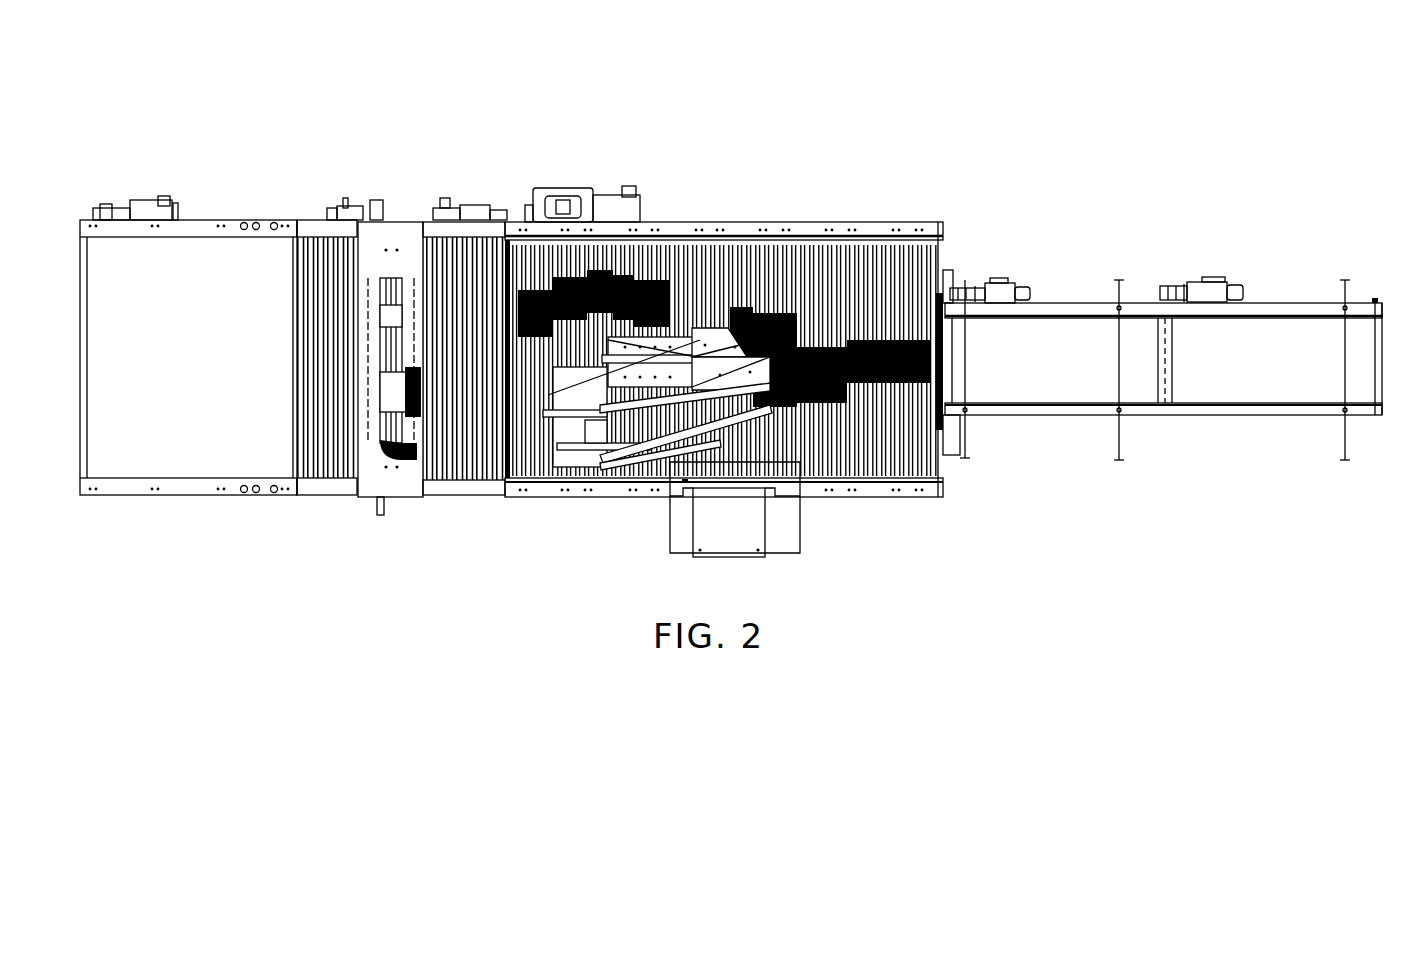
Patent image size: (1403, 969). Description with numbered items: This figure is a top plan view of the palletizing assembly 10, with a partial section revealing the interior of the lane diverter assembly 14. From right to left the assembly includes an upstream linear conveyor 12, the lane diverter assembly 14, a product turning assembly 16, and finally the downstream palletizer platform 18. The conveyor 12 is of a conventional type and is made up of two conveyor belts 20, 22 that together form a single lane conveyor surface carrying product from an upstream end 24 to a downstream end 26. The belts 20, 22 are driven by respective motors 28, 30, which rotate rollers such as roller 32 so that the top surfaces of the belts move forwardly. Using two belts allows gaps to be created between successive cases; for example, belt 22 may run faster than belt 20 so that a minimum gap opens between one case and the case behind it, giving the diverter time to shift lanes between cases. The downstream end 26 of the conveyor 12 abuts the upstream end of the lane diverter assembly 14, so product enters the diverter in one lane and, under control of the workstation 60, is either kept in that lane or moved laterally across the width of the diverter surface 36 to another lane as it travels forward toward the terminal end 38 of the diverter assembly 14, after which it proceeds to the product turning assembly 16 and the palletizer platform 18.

The palletizing assembly 10 is at (908, 100).
The upstream linear conveyor 12 is at (1171, 340).
The lane diverter assembly 14 is at (803, 188).
The product turning assembly 16 is at (289, 364).
The downstream palletizer platform 18 is at (199, 530).
The conveyor belt 20 is at (1280, 385).
The conveyor belt 22 is at (1062, 385).
The upstream end 24 is at (1378, 298).
The downstream end 26 is at (955, 472).
The motor 28 is at (1210, 278).
The motor 30 is at (990, 280).
The roller 32 is at (1372, 418).
The diverter surface 36 is at (910, 238).
The terminal end 38 is at (503, 522).
The workstation 60 is at (742, 537).